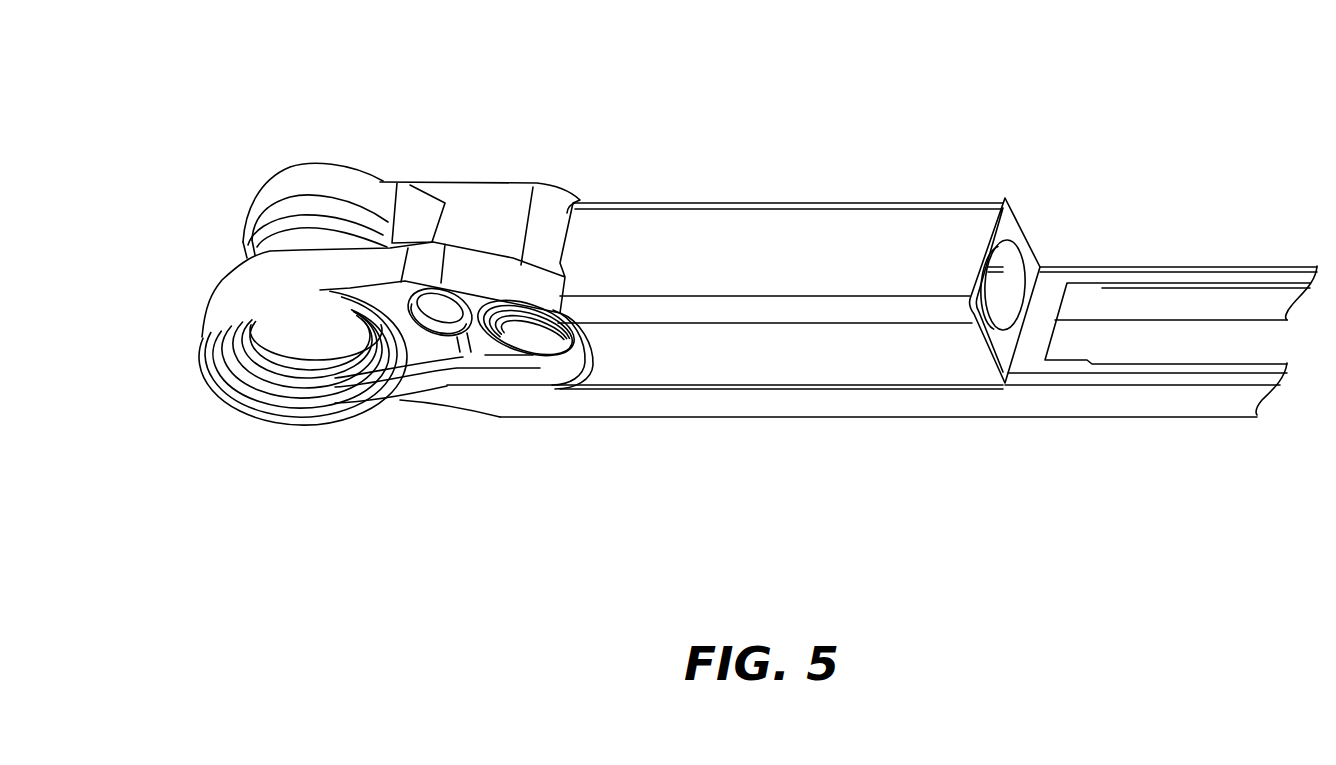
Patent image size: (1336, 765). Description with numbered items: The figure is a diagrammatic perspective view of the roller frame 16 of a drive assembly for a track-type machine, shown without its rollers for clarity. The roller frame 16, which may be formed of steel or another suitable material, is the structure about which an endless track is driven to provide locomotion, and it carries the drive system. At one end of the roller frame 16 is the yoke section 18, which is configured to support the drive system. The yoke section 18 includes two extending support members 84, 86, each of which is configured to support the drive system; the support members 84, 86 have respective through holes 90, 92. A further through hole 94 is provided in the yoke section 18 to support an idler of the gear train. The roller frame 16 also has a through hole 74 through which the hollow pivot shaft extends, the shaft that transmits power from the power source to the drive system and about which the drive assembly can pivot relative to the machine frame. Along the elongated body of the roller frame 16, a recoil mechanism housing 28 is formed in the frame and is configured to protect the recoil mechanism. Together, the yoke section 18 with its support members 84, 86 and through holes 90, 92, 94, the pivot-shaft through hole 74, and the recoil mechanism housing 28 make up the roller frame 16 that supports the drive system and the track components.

The roller frame 16 is at (818, 203).
The yoke section 18 is at (497, 182).
The recoil mechanism housing 28 is at (1005, 198).
The through hole 74 is at (548, 360).
The extending support member 84 is at (208, 292).
The extending support member 86 is at (278, 176).
The through hole 90 is at (245, 382).
The through hole 92 is at (244, 240).
The through hole 94 is at (460, 352).